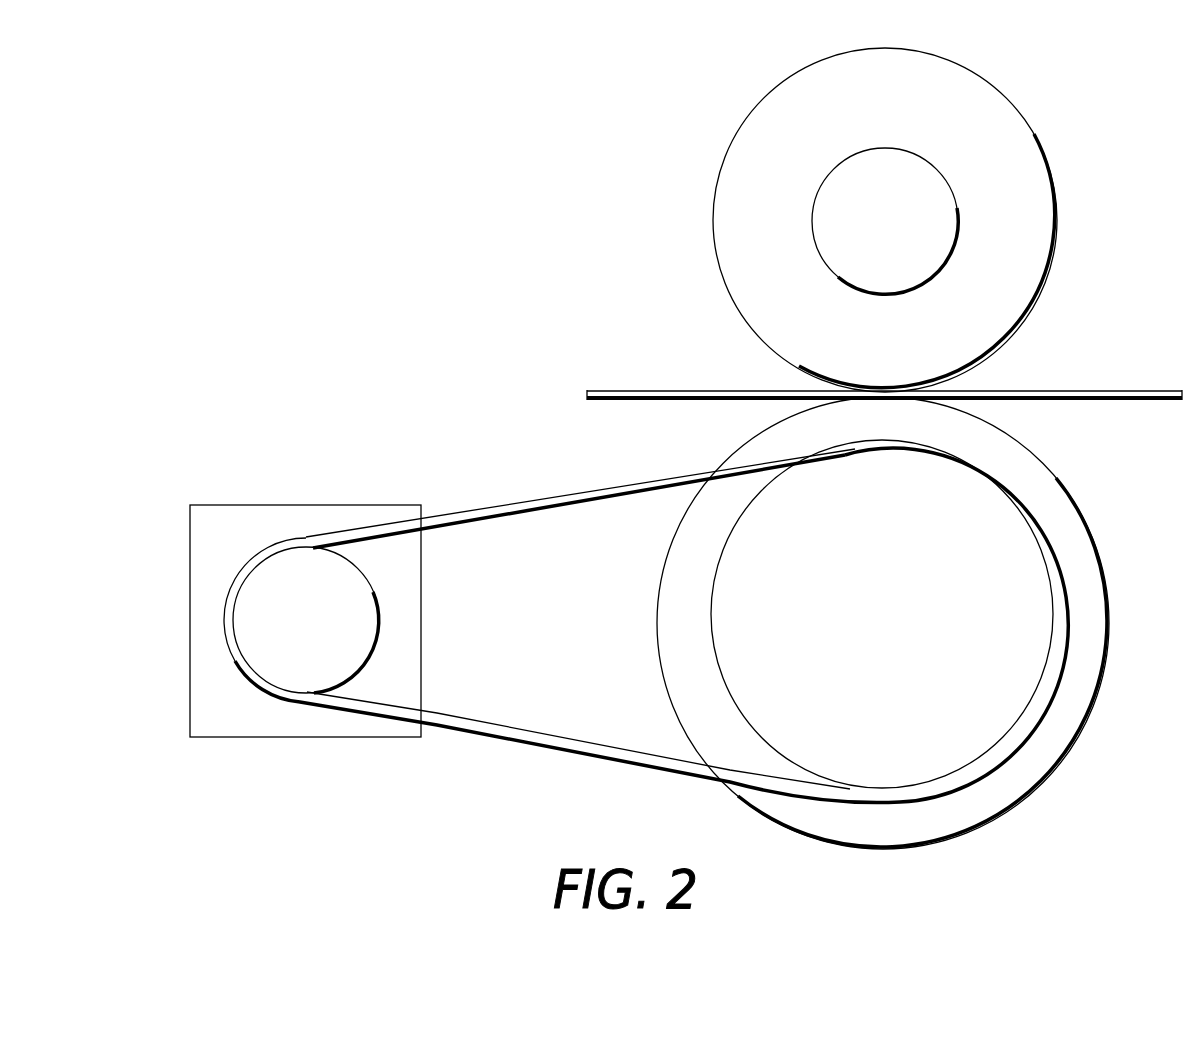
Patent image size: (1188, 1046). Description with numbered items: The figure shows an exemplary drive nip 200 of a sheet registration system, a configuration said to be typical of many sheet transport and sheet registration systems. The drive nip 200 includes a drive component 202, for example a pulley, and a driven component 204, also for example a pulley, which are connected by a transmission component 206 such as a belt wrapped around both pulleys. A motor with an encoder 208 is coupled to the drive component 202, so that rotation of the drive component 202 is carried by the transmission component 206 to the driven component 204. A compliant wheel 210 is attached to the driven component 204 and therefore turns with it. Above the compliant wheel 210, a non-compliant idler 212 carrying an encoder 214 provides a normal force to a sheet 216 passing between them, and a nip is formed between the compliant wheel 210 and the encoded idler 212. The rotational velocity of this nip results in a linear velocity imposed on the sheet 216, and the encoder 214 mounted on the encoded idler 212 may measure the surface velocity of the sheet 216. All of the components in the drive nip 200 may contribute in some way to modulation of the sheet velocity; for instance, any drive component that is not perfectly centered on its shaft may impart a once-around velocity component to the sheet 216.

The drive nip 200 is at (312, 372).
The drive component 202 is at (377, 600).
The driven component 204 is at (1042, 635).
The transmission component 206 is at (567, 493).
The motor with an encoder 208 is at (190, 688).
The compliant wheel 210 is at (1085, 517).
The non-compliant idler 212 is at (1053, 192).
The encoder 214 is at (950, 190).
The sheet 216 is at (1090, 391).